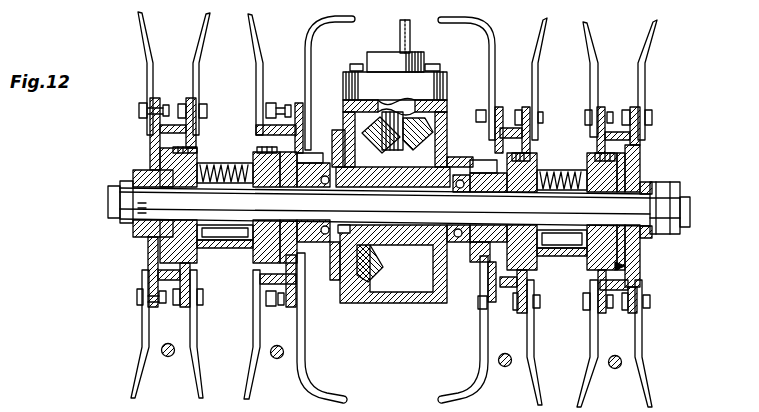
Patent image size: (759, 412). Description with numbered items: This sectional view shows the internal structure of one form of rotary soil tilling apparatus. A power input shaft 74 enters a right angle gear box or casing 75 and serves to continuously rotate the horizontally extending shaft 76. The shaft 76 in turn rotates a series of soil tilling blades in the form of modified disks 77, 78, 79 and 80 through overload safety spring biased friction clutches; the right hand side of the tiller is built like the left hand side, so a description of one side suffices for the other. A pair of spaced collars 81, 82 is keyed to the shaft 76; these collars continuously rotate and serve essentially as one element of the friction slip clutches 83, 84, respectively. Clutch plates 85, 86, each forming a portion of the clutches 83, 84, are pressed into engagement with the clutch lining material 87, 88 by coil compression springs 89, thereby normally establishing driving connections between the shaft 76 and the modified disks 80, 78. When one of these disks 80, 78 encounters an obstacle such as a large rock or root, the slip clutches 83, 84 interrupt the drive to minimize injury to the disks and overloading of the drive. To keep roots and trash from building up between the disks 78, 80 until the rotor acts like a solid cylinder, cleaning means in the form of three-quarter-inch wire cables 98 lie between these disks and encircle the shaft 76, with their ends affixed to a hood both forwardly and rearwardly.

The power input shaft 74 is at (410, 38).
The right angle gear box or casing 75 is at (412, 322).
The horizontally extending shaft 76 is at (672, 214).
The modified disk 77 is at (150, 41).
The modified disk 78 is at (207, 43).
The modified disk 79 is at (313, 56).
The modified disk 80 is at (262, 54).
The collar 81 is at (480, 262).
The collar 82 is at (650, 186).
The friction slip clutch 83 is at (471, 281).
The friction slip clutch 84 is at (641, 272).
The clutch plate 85 is at (540, 256).
The clutch plate 86 is at (592, 263).
The clutch lining material 87 is at (531, 157).
The clutch lining material 88 is at (640, 165).
The coil compression spring 89 is at (562, 173).
The wire cable 98 is at (168, 357).